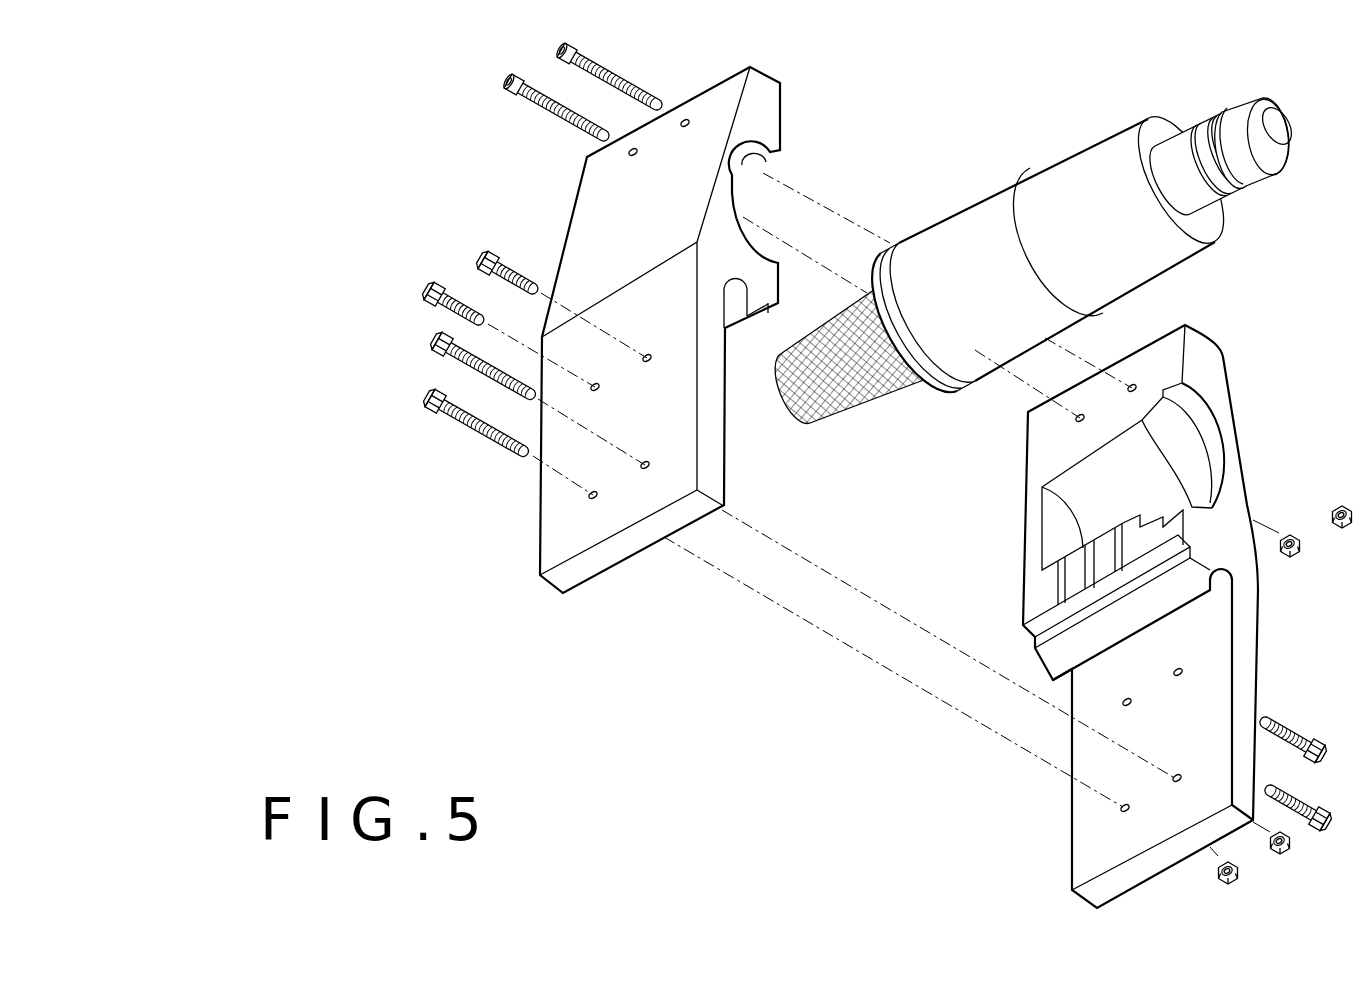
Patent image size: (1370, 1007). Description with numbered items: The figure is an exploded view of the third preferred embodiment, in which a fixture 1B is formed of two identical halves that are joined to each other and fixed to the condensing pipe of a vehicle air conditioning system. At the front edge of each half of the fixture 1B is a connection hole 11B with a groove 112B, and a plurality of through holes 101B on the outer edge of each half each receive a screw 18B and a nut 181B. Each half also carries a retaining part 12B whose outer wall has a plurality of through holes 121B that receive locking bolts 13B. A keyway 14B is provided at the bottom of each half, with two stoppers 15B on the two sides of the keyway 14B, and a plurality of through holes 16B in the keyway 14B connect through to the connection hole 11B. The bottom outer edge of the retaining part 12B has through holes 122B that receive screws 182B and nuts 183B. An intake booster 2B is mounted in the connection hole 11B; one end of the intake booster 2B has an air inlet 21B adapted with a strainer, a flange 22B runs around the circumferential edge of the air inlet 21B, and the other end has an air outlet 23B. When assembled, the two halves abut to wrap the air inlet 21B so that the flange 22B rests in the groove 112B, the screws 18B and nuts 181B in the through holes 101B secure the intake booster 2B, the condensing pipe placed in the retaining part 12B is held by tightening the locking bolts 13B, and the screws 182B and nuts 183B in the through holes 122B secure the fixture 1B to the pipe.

The fixture 1B is at (1243, 388).
The intake booster 2B is at (1040, 223).
The connection hole 11B is at (1093, 498).
The retaining part 12B is at (1085, 820).
The locking bolt 13B is at (1313, 805).
The keyway 14B is at (770, 306).
The stopper 15B is at (755, 313).
The through holes 16B is at (1058, 586).
The screw 18B is at (557, 112).
The air inlet 21B is at (820, 347).
The flange 22B is at (877, 280).
The air outlet 23B is at (1272, 125).
The through holes 101B is at (1130, 392).
The groove 112B is at (1182, 383).
The through holes 121B is at (1134, 700).
The through holes 122B is at (1128, 812).
The nut 181B is at (1345, 527).
The screw 182B is at (497, 436).
The nut 183B is at (1240, 877).